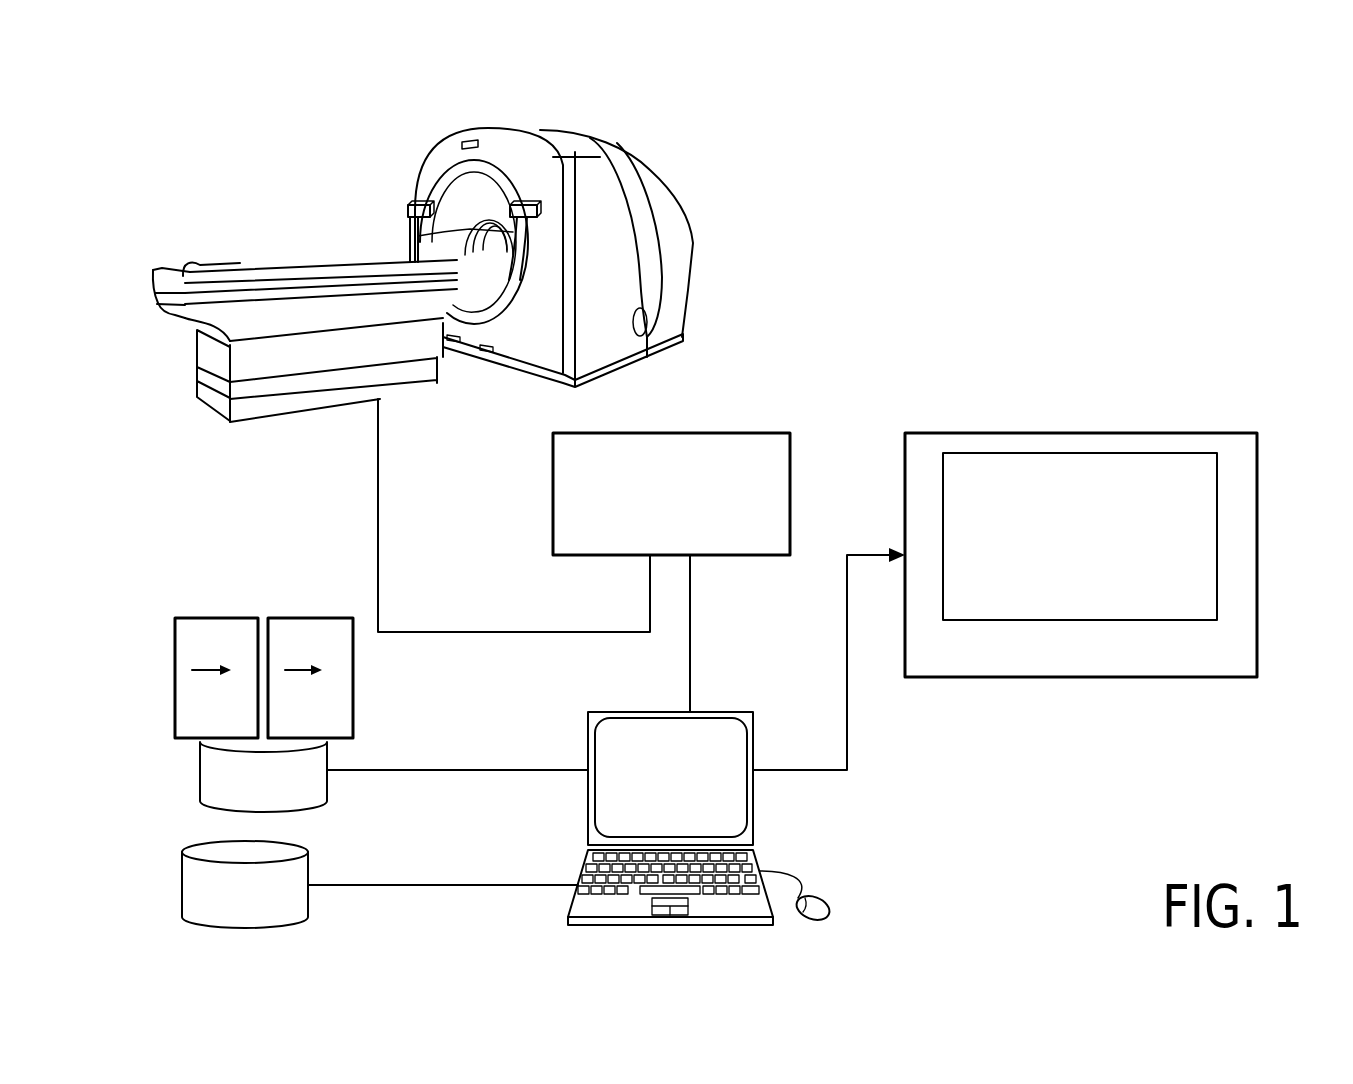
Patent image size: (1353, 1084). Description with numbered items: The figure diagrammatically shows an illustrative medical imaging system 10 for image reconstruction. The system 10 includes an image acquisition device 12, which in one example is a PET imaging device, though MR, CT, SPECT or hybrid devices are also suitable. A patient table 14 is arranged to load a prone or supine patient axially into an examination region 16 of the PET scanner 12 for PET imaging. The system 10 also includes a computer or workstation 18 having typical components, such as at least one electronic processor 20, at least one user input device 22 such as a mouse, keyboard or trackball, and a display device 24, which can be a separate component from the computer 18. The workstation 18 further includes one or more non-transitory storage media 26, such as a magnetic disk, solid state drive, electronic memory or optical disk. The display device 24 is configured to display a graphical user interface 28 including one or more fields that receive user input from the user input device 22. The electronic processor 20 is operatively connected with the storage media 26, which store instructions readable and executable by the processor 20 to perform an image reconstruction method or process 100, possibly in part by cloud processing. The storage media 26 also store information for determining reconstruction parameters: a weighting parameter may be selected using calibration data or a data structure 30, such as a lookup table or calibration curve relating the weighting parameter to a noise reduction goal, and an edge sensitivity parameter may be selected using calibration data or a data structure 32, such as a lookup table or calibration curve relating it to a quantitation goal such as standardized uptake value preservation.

The medical imaging system 10 is at (1156, 221).
The image acquisition device 12 is at (552, 140).
The patient table 14 is at (272, 273).
The examination region 16 is at (410, 236).
The computer or workstation 18 is at (565, 719).
The electronic processor 20 is at (753, 805).
The user input device 22 is at (831, 909).
The display device 24 is at (656, 790).
The non-transitory storage media 26 is at (158, 673).
The graphical user interface 28 is at (1066, 552).
The calibration data or data structure for weighting parameter 30 is at (296, 720).
The calibration data or data structure for edge sensitivity parameter 32 is at (203, 720).
The image reconstruction method or process 100 is at (650, 538).